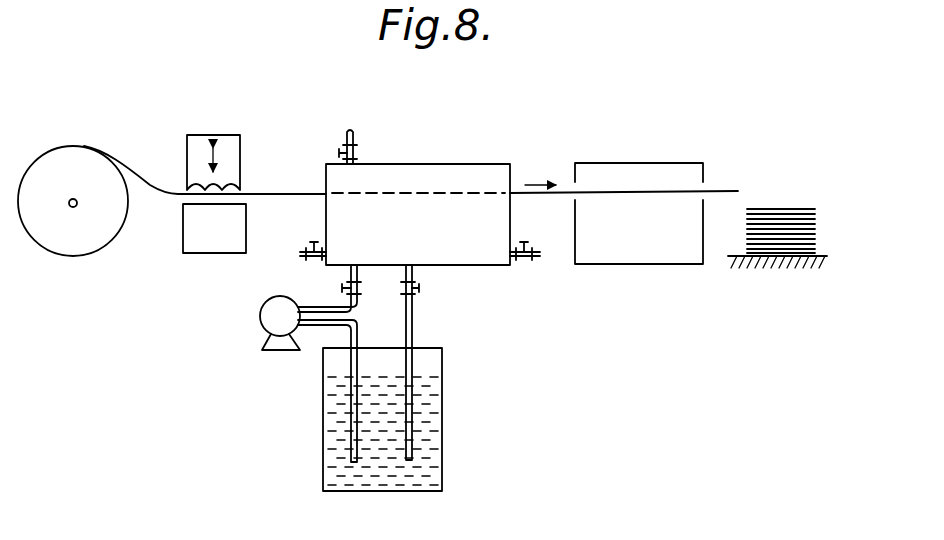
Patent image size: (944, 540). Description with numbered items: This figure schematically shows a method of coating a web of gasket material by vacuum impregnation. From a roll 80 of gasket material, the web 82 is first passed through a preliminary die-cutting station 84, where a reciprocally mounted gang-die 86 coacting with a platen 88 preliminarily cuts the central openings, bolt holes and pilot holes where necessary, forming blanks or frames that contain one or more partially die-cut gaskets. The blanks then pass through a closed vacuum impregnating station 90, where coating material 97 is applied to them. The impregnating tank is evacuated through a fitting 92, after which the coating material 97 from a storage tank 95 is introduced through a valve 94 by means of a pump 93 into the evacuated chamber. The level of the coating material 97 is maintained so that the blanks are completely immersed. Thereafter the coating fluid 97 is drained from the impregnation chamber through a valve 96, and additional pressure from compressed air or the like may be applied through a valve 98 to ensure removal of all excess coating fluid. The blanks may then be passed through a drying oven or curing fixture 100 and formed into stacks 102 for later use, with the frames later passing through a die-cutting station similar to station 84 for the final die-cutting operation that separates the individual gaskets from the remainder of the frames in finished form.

The roll 80 is at (63, 238).
The web 82 is at (133, 169).
The preliminary die-cutting station 84 is at (165, 207).
The gang-die 86 is at (227, 157).
The platen 88 is at (197, 243).
The vacuum impregnating station 90 is at (449, 155).
The fitting 92 is at (355, 151).
The pump 93 is at (268, 313).
The valve 94 is at (342, 288).
The storage tank 95 is at (442, 448).
The valve 96 is at (419, 288).
The coating material 97 is at (425, 408).
The valve 98 is at (528, 258).
The drying oven or curing fixture 100 is at (628, 163).
The stacks 102 is at (772, 209).